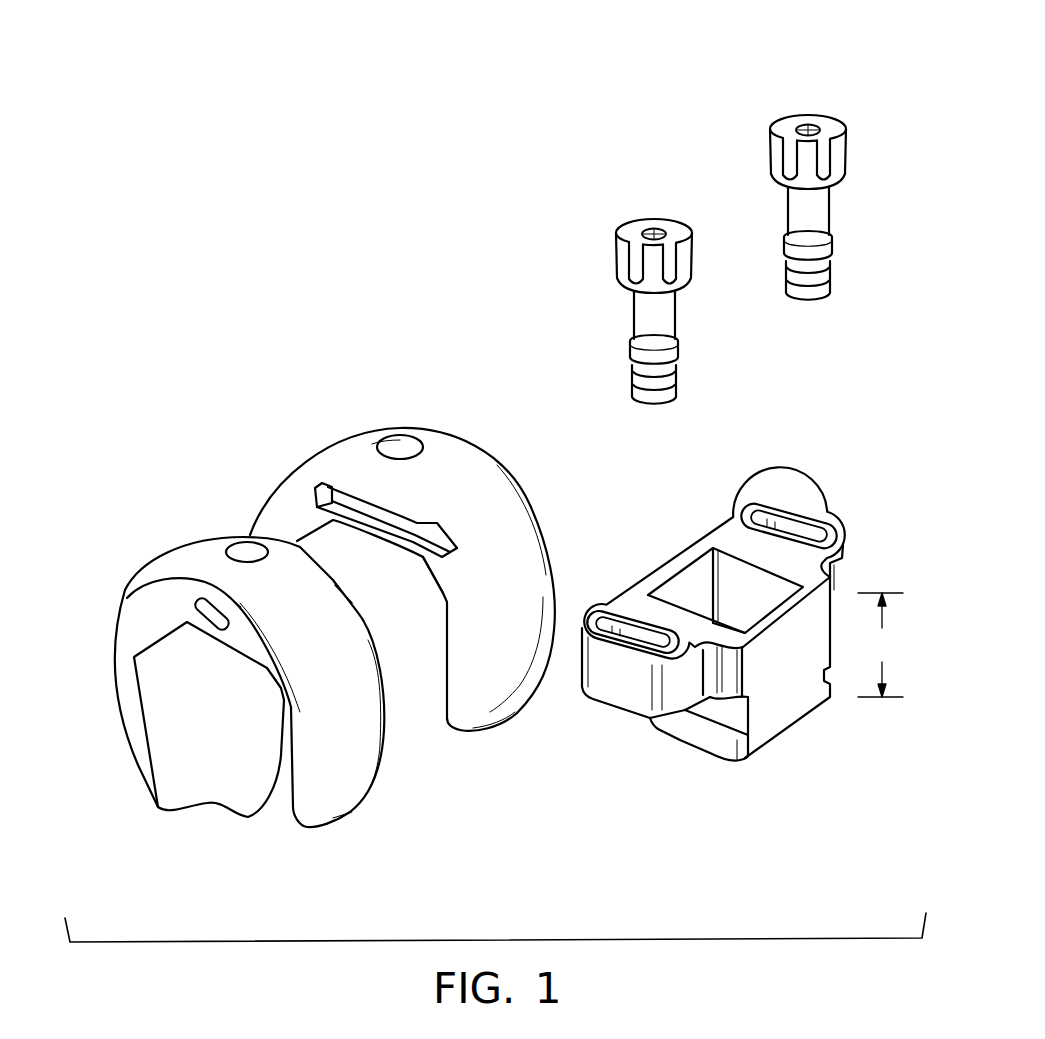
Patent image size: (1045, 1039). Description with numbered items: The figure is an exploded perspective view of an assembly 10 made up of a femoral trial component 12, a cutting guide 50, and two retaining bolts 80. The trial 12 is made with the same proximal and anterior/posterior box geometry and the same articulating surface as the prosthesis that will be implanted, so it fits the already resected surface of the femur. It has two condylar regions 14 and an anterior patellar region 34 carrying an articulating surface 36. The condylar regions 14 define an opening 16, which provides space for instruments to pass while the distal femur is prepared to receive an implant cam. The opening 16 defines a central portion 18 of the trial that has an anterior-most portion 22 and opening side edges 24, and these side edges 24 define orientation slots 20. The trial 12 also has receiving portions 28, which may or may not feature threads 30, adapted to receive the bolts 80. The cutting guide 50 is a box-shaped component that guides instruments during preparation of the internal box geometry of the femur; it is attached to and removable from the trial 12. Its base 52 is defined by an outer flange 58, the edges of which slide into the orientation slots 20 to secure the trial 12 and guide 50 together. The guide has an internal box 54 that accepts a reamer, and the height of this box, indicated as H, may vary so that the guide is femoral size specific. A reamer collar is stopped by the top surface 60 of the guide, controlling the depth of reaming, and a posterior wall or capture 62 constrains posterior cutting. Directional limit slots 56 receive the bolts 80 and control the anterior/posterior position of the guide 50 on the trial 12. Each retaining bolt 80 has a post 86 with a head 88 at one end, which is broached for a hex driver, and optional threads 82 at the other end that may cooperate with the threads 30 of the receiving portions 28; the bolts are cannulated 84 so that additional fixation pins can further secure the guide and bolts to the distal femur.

The assembly 10 is at (401, 108).
The femoral trial component 12 is at (262, 430).
The condylar regions 14 is at (337, 793).
The opening 16 is at (419, 770).
The central portion 18 is at (386, 637).
The orientation slots 20 is at (418, 537).
The anterior-most portion 22 is at (300, 547).
The opening side edges 24 is at (398, 507).
The receiving portions 28 is at (388, 437).
The threads 30 is at (400, 447).
The anterior patellar region 34 is at (188, 777).
The articulating surface 36 is at (120, 690).
The cutting guide 50 is at (794, 793).
The base 52 is at (687, 733).
The internal box 54 is at (733, 590).
The directional limit slots 56 is at (790, 527).
The outer flange 58 is at (713, 753).
The top surface 60 is at (642, 582).
The posterior wall 62 is at (807, 610).
The retaining bolts 80 is at (661, 120).
The threads 82 is at (840, 302).
The cannulation 84 is at (760, 96).
The posts 86 is at (843, 219).
The heads 88 is at (840, 130).